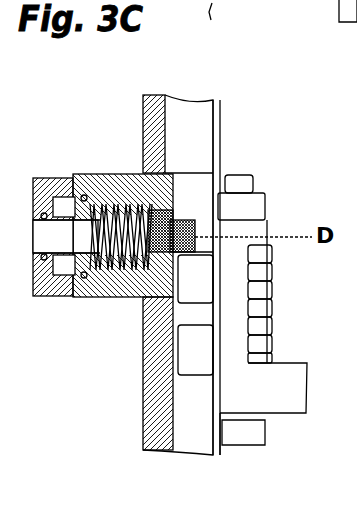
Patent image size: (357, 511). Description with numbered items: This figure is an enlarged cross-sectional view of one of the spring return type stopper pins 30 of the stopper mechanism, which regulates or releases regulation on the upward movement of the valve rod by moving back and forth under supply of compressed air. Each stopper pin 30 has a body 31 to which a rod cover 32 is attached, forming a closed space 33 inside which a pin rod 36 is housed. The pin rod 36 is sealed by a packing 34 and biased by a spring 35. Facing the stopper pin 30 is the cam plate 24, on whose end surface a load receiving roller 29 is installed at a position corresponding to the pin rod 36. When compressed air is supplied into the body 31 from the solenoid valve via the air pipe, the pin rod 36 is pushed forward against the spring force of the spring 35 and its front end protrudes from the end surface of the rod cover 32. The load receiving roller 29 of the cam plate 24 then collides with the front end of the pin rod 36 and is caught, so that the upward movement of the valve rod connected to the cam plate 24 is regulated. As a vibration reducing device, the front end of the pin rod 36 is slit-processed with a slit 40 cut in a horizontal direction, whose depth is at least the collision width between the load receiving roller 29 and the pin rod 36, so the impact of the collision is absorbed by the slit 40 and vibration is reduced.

The cam plate 24 is at (287, 418).
The load receiving roller 29 is at (203, 308).
The stopper pin 30 is at (91, 117).
The body 31 is at (63, 177).
The rod cover 32 is at (130, 177).
The closed space 33 is at (56, 298).
The packing 34 is at (87, 300).
The spring 35 is at (123, 300).
The pin rod 36 is at (182, 213).
The slit 40 is at (240, 216).